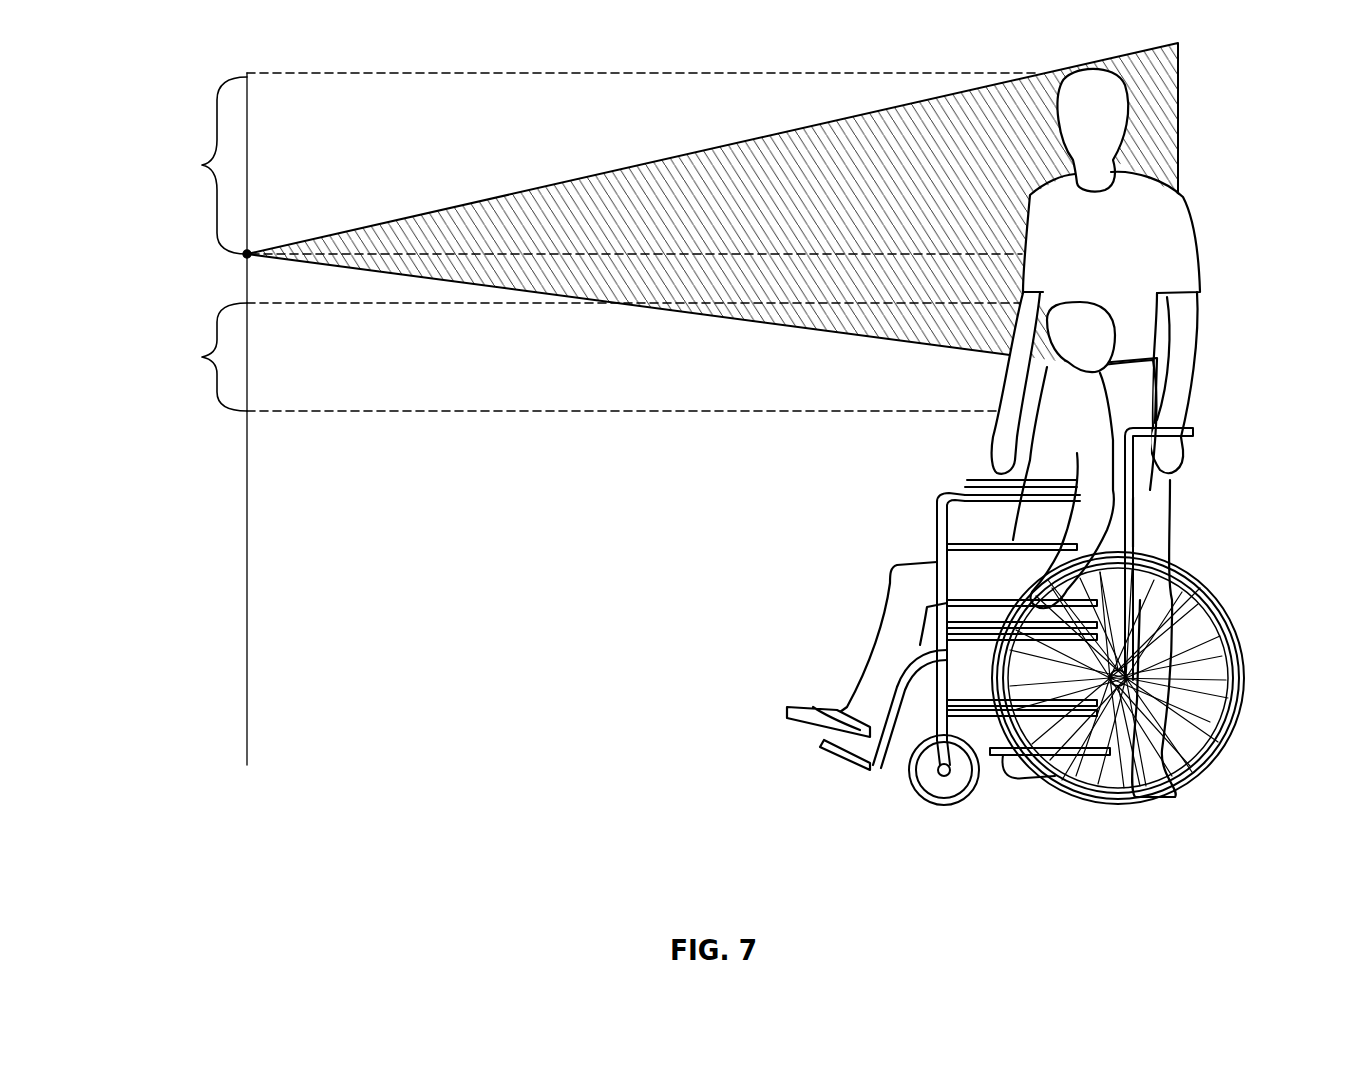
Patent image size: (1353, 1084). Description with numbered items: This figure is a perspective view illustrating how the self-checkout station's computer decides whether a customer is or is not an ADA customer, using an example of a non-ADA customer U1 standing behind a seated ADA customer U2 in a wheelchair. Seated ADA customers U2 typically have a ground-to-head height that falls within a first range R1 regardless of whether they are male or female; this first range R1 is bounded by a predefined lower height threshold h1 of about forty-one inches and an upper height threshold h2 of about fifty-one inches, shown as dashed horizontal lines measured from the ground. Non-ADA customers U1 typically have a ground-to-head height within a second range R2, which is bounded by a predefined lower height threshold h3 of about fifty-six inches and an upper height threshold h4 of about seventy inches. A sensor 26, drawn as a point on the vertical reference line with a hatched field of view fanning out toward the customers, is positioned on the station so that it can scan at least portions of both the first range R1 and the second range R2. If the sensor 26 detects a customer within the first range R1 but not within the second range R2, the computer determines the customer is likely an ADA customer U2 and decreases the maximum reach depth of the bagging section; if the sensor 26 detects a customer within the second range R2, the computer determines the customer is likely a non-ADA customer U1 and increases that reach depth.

The sensor 26 is at (245, 254).
The first range R1 is at (204, 357).
The second range R2 is at (204, 165).
The lower height threshold h1 is at (370, 411).
The upper height threshold h2 is at (372, 303).
The lower height threshold h3 is at (397, 252).
The upper height threshold h4 is at (363, 75).
The non-ADA customer U1 is at (1177, 218).
The ADA customer U2 is at (1100, 413).